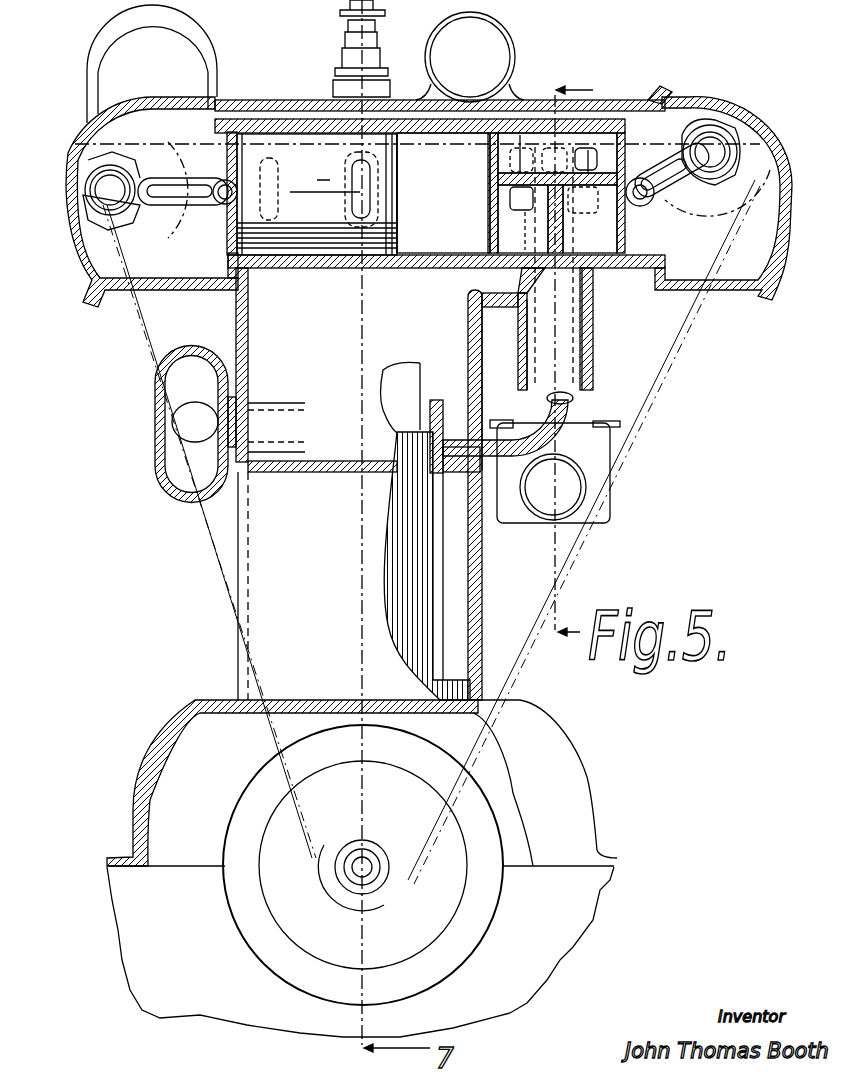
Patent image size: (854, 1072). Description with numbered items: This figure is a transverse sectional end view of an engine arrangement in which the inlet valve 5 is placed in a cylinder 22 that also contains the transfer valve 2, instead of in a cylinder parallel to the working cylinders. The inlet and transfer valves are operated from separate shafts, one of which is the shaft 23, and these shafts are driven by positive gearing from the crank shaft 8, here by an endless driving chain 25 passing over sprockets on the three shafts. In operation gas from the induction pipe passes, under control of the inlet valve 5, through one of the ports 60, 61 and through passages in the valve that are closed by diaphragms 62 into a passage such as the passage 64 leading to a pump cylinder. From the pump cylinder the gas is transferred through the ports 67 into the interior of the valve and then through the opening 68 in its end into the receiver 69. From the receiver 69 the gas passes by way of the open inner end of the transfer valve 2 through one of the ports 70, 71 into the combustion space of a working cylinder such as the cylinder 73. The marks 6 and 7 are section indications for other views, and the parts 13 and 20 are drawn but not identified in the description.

The transfer valve 2 is at (293, 163).
The inlet valve 5 is at (590, 165).
The section line 6- 6 is at (572, 368).
The spark plug 7 is at (372, 48).
The crank shaft 8 is at (353, 863).
The exhaust passage 13 is at (555, 340).
The rocker arm 20 is at (142, 160).
The cylinder 22 is at (518, 135).
The shaft 23 is at (748, 175).
The endless driving chain 25 is at (132, 312).
The port 60 is at (633, 248).
The port 61 is at (520, 247).
The diaphragm 62 is at (512, 134).
The passage 64 is at (516, 465).
The port 67 is at (678, 136).
The opening 68 is at (505, 158).
The receiver 69 is at (420, 230).
The port 70 is at (366, 220).
The port 71 is at (287, 263).
The cylinder 73 is at (395, 391).